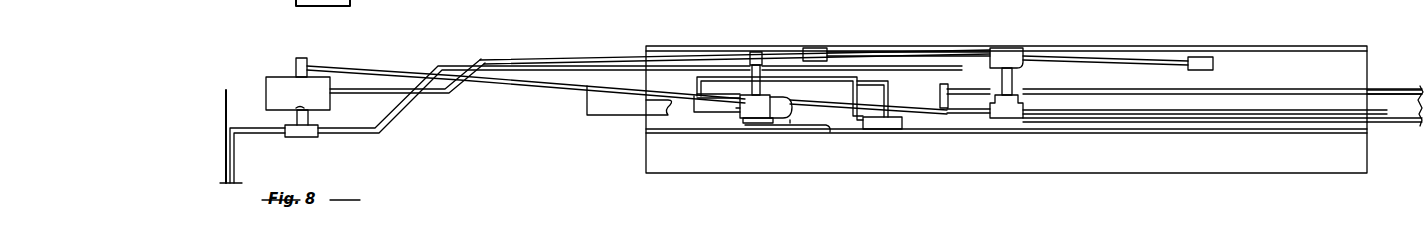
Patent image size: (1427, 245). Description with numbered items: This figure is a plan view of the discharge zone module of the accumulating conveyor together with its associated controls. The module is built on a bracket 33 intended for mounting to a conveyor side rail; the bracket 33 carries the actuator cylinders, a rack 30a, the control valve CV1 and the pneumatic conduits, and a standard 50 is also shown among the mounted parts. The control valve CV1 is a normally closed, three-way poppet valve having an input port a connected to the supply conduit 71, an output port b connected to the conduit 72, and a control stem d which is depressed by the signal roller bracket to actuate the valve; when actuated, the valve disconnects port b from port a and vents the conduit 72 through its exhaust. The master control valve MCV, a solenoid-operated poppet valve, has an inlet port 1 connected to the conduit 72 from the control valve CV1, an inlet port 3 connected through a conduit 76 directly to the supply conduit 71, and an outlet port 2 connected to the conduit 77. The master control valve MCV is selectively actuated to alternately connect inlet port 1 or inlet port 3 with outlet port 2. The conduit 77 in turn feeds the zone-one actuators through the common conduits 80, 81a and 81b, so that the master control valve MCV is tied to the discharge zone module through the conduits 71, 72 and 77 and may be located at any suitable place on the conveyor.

The bracket 33 is at (1277, 45).
The supply conduit 71 is at (860, 130).
The conduit 72 is at (370, 86).
The conduit 76 is at (304, 137).
The conduit 77 is at (522, 88).
The conduit 80 is at (1013, 82).
The conduit 81a is at (915, 55).
The conduit 81b is at (1123, 57).
The rack 30a is at (1300, 89).
The standard 50 is at (825, 129).
The inlet port 1 is at (298, 93).
The outlet port 2 is at (304, 58).
The inlet port 3 is at (296, 103).
The input port a is at (738, 108).
The output port b is at (755, 50).
The control stem d is at (790, 123).
The control valve CV1 is at (758, 118).
The master control valve MCV is at (290, 69).